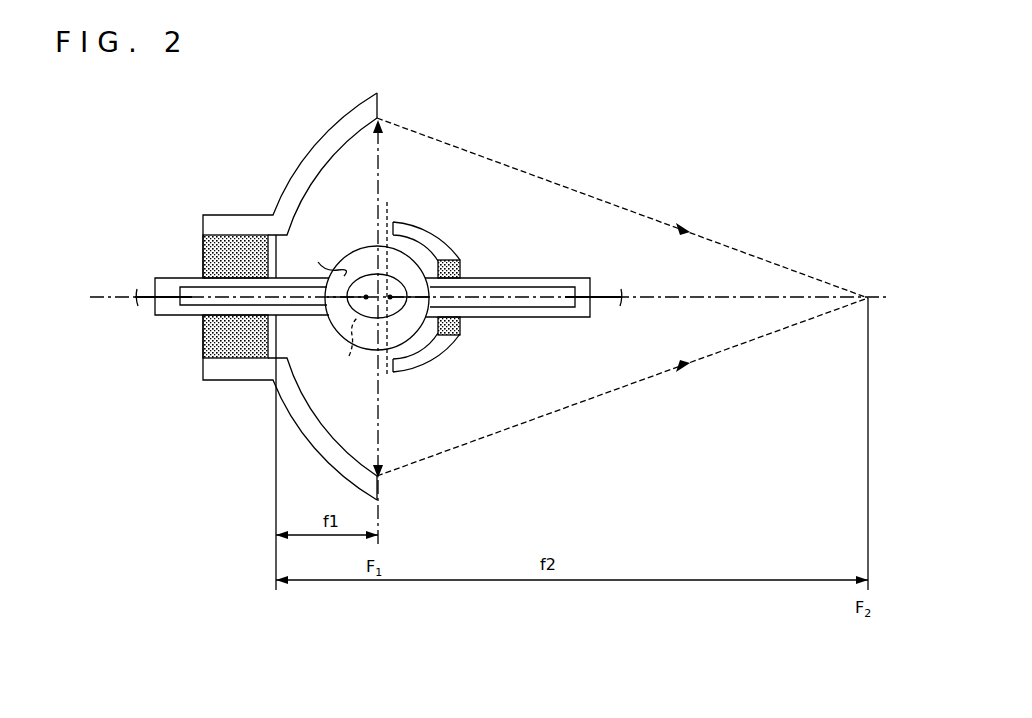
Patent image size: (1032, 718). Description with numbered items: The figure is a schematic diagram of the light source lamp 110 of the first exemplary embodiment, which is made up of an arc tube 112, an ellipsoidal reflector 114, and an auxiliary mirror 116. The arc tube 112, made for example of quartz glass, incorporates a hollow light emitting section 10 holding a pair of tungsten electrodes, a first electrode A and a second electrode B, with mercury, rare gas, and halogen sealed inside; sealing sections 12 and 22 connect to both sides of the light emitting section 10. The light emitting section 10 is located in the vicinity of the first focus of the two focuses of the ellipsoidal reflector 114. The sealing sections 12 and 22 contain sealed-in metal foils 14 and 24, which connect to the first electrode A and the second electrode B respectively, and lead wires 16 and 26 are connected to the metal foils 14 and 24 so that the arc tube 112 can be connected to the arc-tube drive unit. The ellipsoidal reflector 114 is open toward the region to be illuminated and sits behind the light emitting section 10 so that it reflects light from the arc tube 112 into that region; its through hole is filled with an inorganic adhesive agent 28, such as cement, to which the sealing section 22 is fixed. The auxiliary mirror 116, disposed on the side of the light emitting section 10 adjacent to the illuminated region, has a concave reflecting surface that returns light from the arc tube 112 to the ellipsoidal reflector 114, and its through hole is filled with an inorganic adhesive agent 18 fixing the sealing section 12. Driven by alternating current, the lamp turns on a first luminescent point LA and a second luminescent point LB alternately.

The light emitting section 10 is at (341, 247).
The sealing section 12 is at (565, 268).
The metal foil 14 is at (530, 306).
The lead wire 16 is at (598, 319).
The inorganic adhesive agent 18 is at (459, 266).
The sealing section 22 is at (178, 281).
The metal foil 24 is at (196, 318).
The lead wire 26 is at (140, 303).
The inorganic adhesive agent 28 is at (205, 236).
The light source lamp 110 is at (545, 106).
The arc tube 112 is at (532, 236).
The ellipsoidal reflector 114 is at (300, 164).
The auxiliary mirror 116 is at (453, 374).